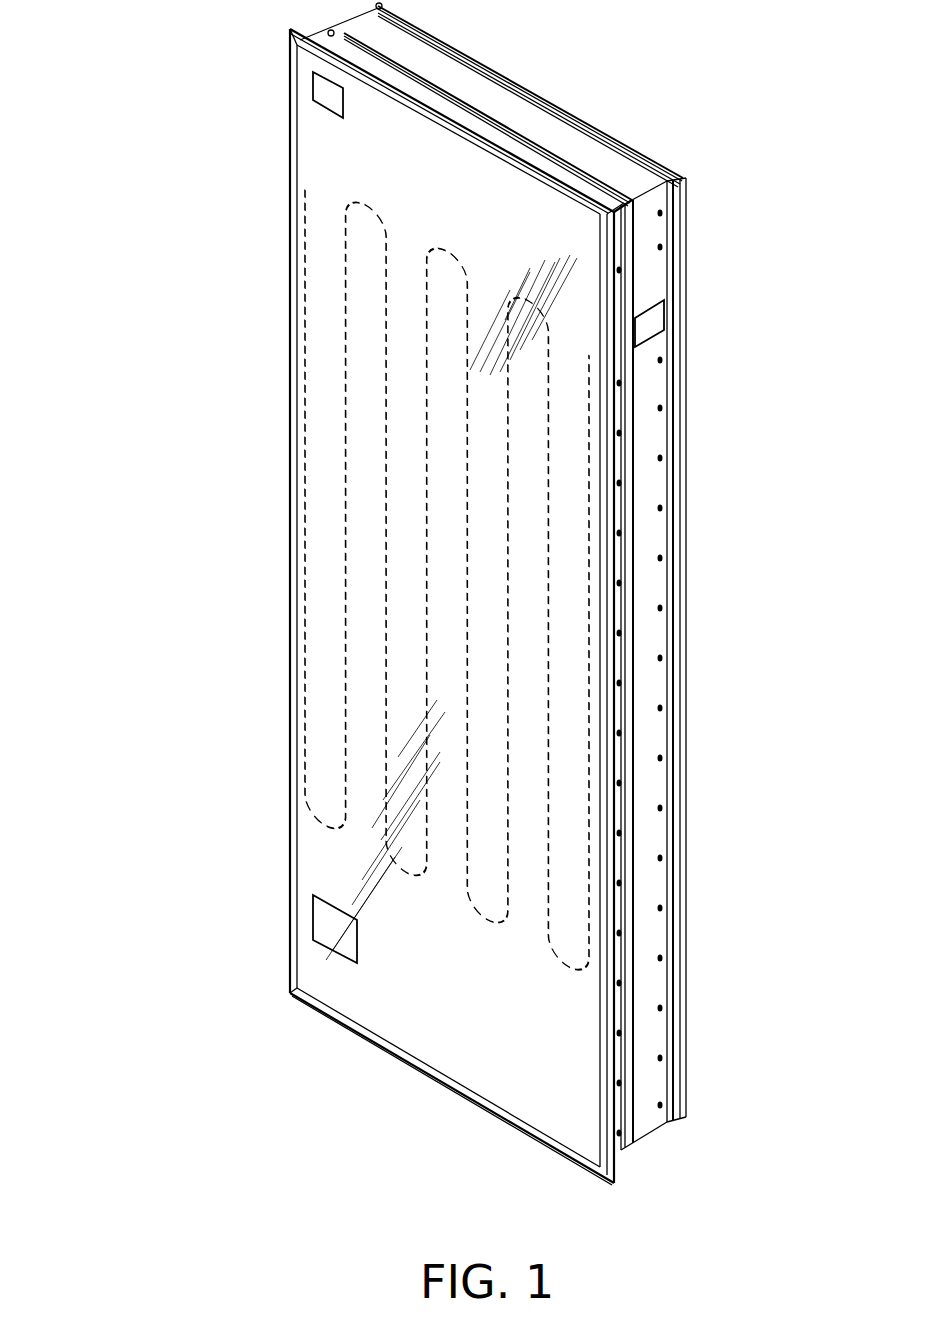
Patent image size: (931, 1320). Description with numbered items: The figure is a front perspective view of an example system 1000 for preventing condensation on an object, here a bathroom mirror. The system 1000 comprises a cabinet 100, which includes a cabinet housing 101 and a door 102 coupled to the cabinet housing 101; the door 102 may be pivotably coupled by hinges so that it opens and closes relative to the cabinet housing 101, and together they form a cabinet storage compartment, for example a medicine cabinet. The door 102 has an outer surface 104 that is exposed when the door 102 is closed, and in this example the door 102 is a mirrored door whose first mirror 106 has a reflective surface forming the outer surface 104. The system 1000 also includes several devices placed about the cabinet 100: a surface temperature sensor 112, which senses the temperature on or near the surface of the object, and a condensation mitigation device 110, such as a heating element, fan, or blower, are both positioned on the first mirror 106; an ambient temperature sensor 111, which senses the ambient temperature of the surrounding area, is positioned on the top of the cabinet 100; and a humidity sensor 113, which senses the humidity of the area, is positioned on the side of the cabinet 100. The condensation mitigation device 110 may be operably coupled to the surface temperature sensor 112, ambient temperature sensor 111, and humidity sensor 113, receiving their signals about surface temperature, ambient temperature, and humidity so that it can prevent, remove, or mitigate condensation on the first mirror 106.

The system 1000 is at (130, 166).
The cabinet 100 is at (363, 378).
The cabinet housing 101 is at (650, 270).
The door 102 is at (570, 433).
The outer surface 104 is at (377, 968).
The first mirror 106 is at (540, 868).
The condensation mitigation device 110 is at (347, 708).
The ambient temperature sensor 111 is at (328, 96).
The surface temperature sensor 112 is at (333, 930).
The humidity sensor 113 is at (650, 323).